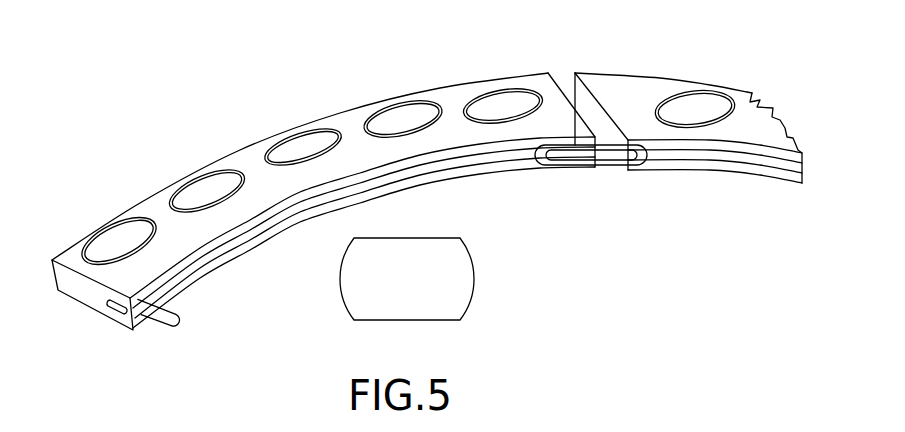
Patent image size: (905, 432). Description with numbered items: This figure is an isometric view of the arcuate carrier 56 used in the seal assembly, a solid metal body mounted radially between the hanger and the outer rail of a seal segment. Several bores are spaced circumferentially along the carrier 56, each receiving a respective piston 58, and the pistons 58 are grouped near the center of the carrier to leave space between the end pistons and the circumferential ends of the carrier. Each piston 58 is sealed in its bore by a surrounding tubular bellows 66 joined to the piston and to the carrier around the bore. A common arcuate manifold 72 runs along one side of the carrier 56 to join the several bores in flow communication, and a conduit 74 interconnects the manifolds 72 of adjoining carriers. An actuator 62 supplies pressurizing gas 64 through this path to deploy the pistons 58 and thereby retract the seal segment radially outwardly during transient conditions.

The arcuate carrier 56 is at (495, 49).
The piston 58 is at (207, 192).
The tubular bellows 66 is at (300, 145).
The actuator 62 is at (452, 238).
The pressurizing gas 64 is at (408, 320).
The arcuate manifold 72 is at (507, 157).
The conduit 74 is at (607, 166).